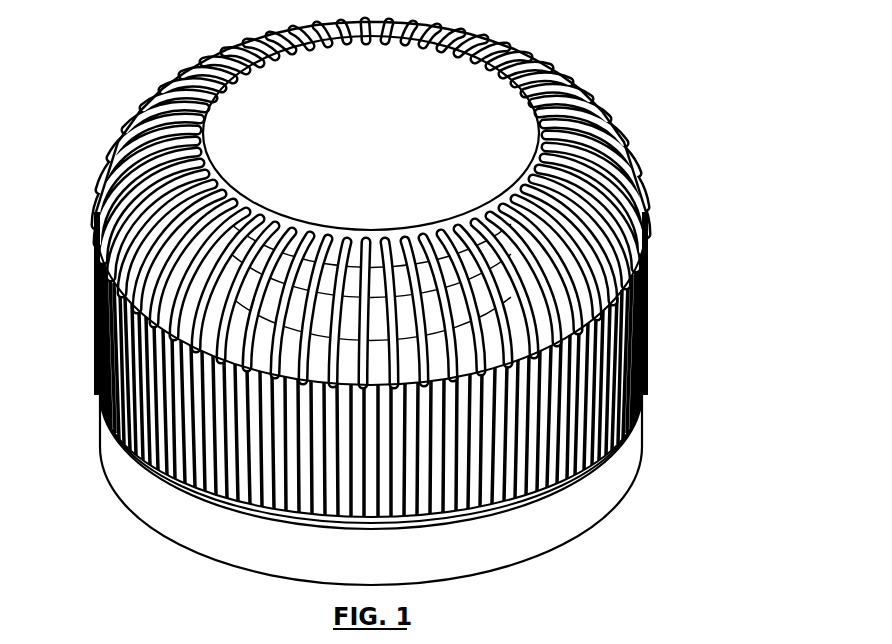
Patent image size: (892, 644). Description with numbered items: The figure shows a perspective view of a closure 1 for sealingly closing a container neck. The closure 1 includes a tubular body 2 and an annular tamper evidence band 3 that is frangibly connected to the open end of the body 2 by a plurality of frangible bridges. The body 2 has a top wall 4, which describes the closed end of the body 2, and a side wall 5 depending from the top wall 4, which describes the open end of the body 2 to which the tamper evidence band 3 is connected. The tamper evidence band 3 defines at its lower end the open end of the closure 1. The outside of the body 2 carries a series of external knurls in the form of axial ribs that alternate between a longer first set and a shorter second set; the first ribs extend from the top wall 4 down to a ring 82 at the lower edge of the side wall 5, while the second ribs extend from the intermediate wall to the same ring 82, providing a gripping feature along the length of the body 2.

The closure 1 is at (682, 81).
The tubular body 2 is at (78, 117).
The annular tamper evidence band 3 is at (574, 508).
The top wall 4 is at (378, 147).
The side wall 5 is at (680, 269).
The ring 82 is at (203, 494).